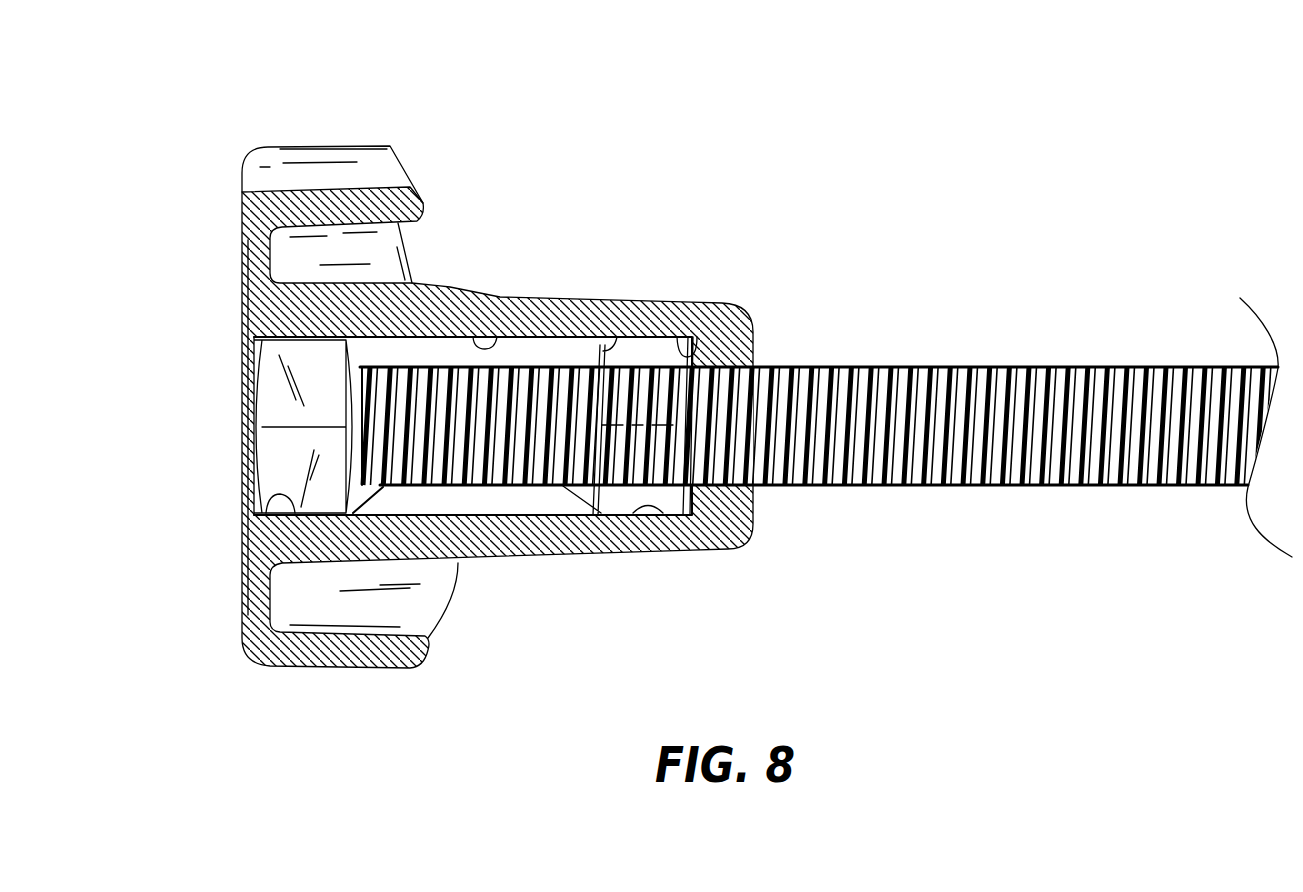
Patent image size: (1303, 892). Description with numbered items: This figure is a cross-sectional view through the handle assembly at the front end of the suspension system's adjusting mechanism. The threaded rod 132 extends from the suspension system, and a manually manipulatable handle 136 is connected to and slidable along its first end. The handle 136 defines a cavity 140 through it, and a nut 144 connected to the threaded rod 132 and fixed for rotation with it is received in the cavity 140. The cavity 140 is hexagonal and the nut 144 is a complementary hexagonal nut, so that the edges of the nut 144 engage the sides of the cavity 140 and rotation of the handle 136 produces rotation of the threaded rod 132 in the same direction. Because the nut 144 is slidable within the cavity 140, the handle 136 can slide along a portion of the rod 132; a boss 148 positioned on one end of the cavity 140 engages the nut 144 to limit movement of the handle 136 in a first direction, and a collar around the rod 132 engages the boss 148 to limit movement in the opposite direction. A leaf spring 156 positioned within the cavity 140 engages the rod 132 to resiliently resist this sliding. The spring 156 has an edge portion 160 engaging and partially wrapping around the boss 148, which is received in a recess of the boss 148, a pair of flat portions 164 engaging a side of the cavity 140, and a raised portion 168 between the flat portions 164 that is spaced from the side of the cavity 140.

The threaded rod 132 is at (991, 365).
The handle 136 is at (387, 165).
The cavity 140 is at (500, 333).
The nut 144 is at (273, 405).
The boss 148 is at (683, 318).
The leaf spring 156 is at (485, 487).
The edge portion 160 is at (753, 502).
The flat portions 164 is at (269, 495).
The raised portion 168 is at (537, 487).